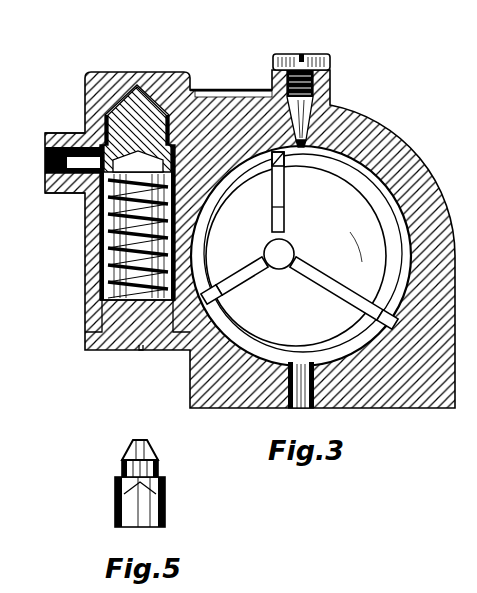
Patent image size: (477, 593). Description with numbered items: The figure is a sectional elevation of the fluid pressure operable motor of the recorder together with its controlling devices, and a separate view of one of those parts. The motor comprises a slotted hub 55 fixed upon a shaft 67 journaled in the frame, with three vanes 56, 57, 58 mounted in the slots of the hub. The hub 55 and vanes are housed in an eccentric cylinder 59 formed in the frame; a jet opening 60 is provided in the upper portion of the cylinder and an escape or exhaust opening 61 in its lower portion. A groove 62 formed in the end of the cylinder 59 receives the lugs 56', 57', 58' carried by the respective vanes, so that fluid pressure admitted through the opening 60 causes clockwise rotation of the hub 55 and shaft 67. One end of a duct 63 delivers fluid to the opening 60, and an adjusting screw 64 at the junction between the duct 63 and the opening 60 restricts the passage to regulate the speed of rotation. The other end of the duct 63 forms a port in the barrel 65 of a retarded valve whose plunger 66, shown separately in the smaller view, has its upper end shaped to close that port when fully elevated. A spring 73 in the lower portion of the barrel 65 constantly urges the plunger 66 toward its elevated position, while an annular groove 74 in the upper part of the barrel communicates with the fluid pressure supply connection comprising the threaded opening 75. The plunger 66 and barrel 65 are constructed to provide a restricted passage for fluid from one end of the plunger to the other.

In FIG. 3, the slotted hub 55 is at (355, 247).
In FIG. 3, the vane 56 is at (290, 192).
In FIG. 3, the lug 56' is at (261, 174).
In FIG. 3, the vane 57 is at (336, 288).
In FIG. 3, the lug 57' is at (380, 302).
In FIG. 3, the vane 58 is at (242, 275).
In FIG. 3, the lug 58' is at (228, 300).
In FIG. 3, the eccentric cylinder 59 is at (398, 212).
In FIG. 3, the jet opening 60 is at (303, 145).
In FIG. 3, the escape or exhaust opening 61 is at (298, 410).
In FIG. 3, the groove 62 is at (389, 201).
In FIG. 3, the duct 63 is at (232, 89).
In FIG. 3, the adjusting screw 64 is at (305, 56).
In FIG. 3, the barrel 65 is at (92, 268).
In FIG. 3, the plunger 66 is at (130, 108).
In FIG. 5, the plunger 66 is at (165, 497).
In FIG. 3, the shaft 67 is at (282, 250).
In FIG. 3, the spring 73 is at (113, 289).
In FIG. 3, the annular groove 74 is at (86, 195).
In FIG. 3, the threaded opening 75 is at (45, 162).